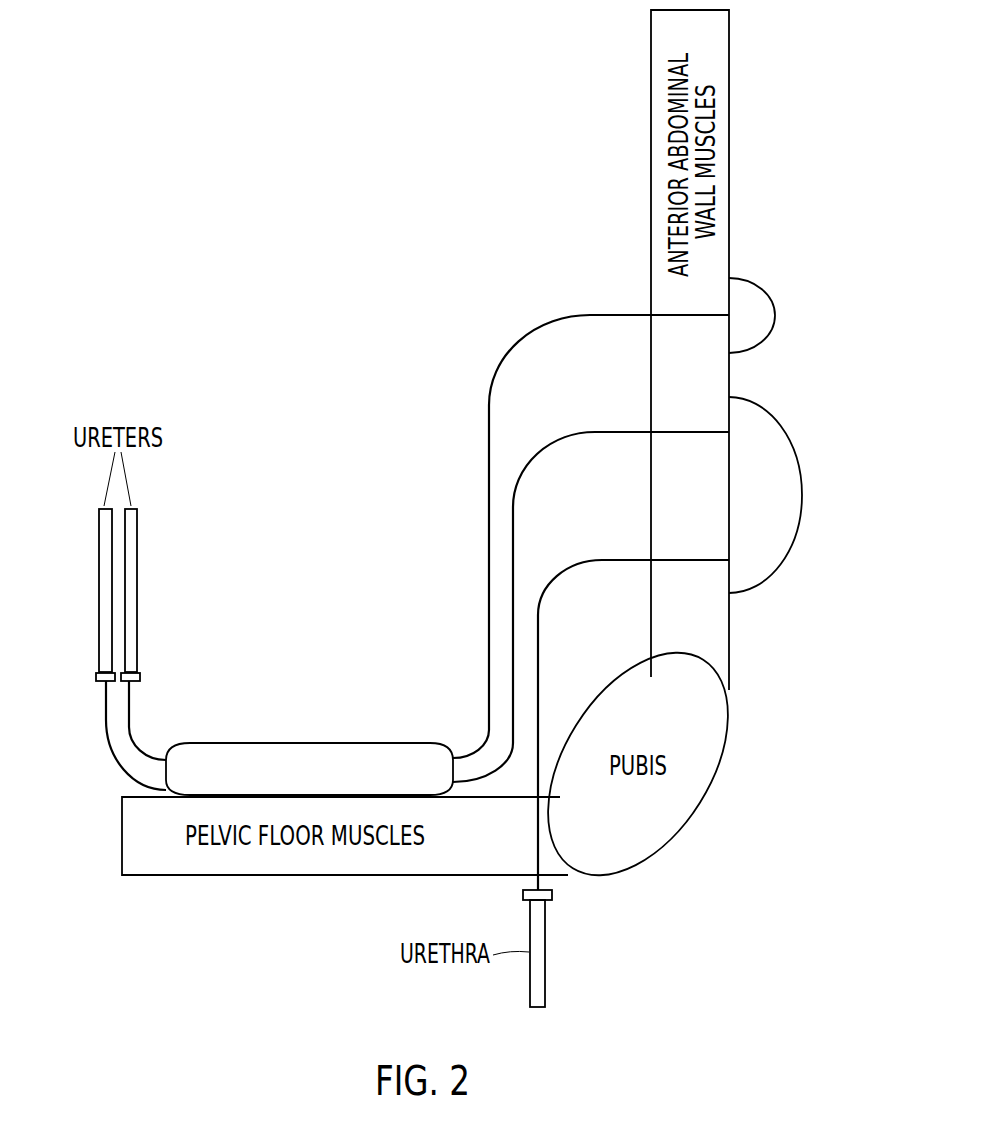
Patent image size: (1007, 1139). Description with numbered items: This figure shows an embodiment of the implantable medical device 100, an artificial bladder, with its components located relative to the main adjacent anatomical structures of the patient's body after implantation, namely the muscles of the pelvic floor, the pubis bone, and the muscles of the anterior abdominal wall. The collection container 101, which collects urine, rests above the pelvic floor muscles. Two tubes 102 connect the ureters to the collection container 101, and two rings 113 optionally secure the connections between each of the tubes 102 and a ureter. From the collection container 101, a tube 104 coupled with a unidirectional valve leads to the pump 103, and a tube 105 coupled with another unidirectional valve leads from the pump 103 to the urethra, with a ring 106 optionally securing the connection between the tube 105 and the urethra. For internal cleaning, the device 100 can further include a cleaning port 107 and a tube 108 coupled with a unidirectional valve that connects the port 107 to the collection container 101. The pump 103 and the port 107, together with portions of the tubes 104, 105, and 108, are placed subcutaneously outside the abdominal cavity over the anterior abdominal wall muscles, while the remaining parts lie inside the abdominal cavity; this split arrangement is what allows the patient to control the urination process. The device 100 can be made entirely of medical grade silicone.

The implantable medical device 100 is at (112, 108).
The collection container 101 is at (312, 743).
The tubes 102 is at (128, 725).
The pump 103 is at (803, 495).
The tube 104 is at (595, 431).
The tube 105 is at (601, 559).
The ring 106 is at (555, 895).
The cleaning port 107 is at (776, 313).
The tube 108 is at (590, 314).
The rings 113 is at (94, 676).